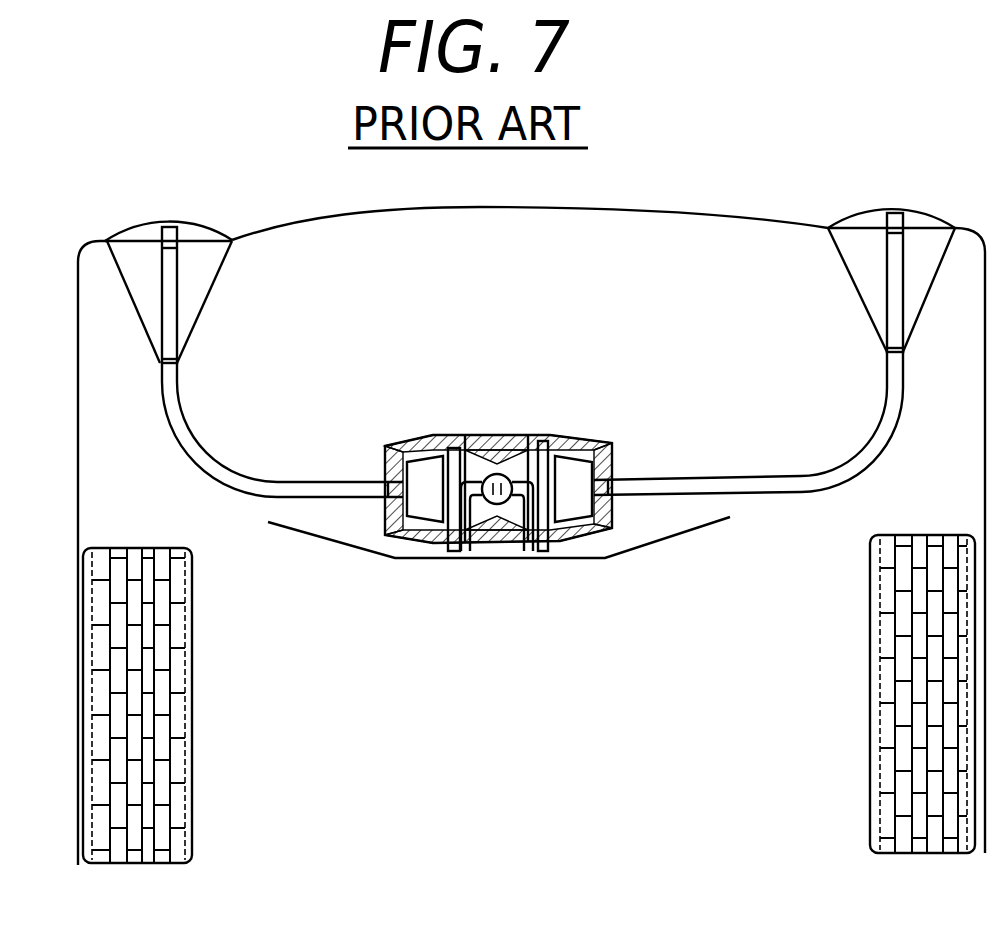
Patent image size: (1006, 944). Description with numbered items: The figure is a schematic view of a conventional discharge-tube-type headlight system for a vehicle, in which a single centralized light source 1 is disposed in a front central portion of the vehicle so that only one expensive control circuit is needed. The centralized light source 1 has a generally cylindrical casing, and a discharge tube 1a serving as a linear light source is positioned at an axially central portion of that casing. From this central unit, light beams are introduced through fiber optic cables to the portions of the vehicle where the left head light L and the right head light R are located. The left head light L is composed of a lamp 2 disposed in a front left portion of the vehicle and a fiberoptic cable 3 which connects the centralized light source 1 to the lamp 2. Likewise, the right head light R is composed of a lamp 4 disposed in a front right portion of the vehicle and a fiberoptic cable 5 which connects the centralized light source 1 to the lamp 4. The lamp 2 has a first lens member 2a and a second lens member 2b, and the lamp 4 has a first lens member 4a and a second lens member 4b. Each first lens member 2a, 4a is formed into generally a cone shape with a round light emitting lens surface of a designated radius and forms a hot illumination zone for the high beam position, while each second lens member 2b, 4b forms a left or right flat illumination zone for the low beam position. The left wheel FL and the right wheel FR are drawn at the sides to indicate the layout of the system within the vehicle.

The centralized light source 1 is at (565, 394).
The discharge tube 1a is at (498, 504).
The lamp 2 is at (181, 295).
The first lens member 2a is at (140, 287).
The second lens member 2b is at (172, 330).
The fiberoptic cable 3 is at (220, 465).
The lamp 4 is at (874, 286).
The first lens member 4a is at (910, 297).
The second lens member 4b is at (898, 318).
The fiberoptic cable 5 is at (858, 445).
The left wheel FL is at (192, 712).
The right wheel FR is at (870, 717).
The left head light L is at (225, 218).
The right head light R is at (846, 195).